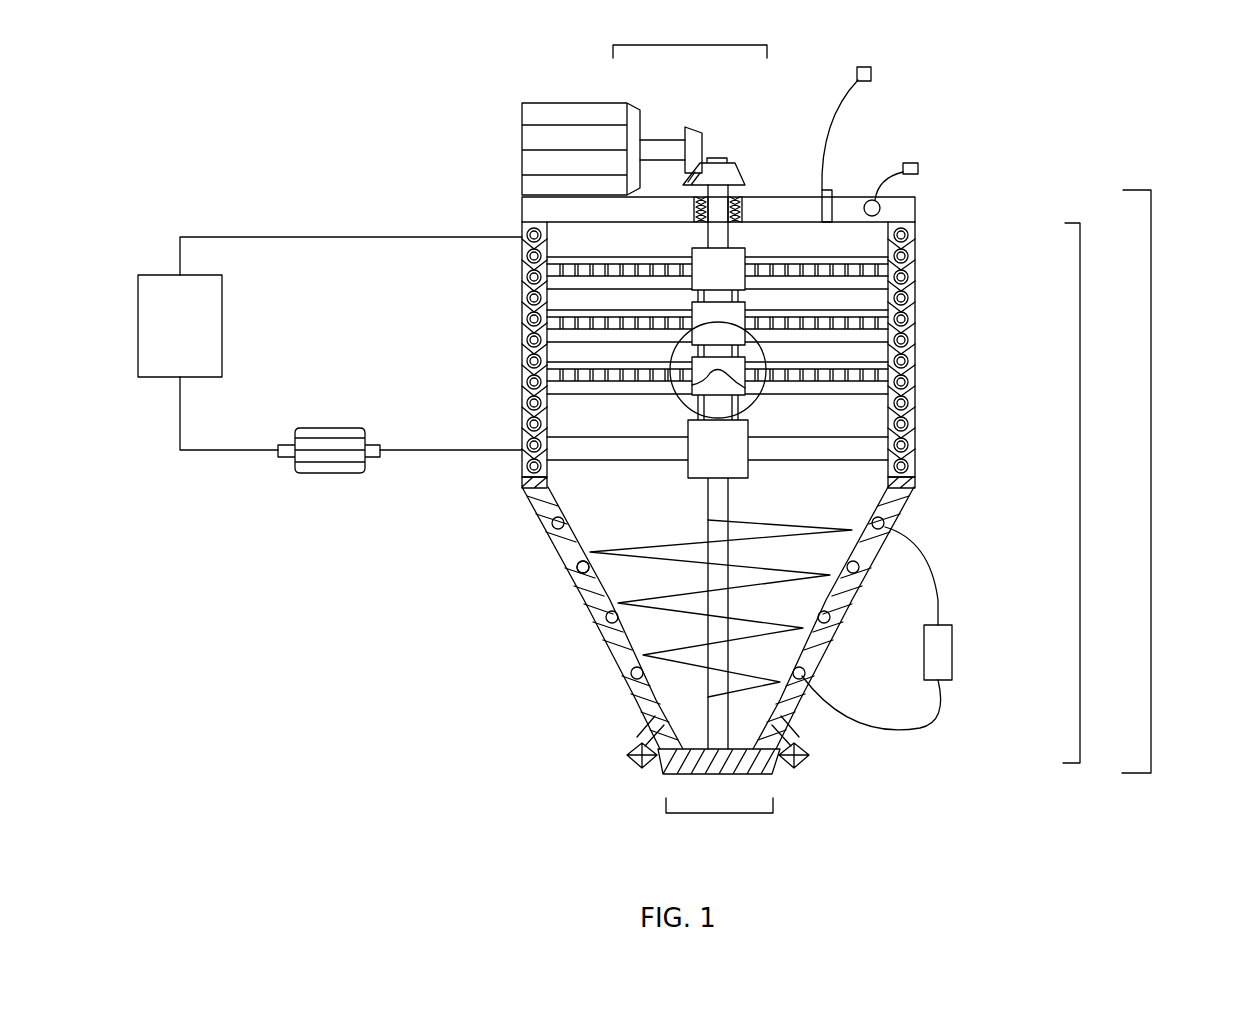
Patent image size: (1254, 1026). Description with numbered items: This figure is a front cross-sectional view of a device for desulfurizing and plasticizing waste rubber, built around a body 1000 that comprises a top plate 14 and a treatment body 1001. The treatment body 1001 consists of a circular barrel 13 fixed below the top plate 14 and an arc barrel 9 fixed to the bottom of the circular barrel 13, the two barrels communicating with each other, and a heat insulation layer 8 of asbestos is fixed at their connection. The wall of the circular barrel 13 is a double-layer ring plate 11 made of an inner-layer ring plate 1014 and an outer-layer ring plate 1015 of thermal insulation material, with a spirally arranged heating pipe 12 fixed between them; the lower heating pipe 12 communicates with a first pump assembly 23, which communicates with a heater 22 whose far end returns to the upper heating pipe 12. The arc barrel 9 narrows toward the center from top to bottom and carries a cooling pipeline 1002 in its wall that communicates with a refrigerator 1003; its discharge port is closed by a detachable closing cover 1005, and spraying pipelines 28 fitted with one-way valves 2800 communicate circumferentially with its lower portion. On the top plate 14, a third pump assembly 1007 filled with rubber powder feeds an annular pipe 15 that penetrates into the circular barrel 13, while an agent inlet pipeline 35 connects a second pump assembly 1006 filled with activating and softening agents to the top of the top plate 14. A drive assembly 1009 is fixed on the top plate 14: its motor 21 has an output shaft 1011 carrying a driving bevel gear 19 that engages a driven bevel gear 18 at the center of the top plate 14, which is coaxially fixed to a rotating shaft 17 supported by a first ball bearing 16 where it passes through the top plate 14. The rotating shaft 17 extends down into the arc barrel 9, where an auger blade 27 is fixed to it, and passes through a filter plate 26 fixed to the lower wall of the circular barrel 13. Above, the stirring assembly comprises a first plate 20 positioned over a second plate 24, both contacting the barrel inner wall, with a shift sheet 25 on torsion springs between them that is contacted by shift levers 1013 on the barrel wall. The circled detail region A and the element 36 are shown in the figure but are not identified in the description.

The body 1000 is at (1174, 481).
The treatment body 1001 is at (1106, 493).
The drive assembly 1009 is at (693, 429).
The output shaft 1011 is at (667, 150).
The motor 21 is at (540, 113).
The driving bevel gear 19 is at (692, 140).
The driven bevel gear 18 is at (720, 175).
The rotating shaft 17 is at (722, 200).
The first ball bearing 16 is at (741, 207).
The second pump assembly 1006 is at (858, 68).
The annular pipe 15 is at (875, 203).
The agent inlet pipeline 35 is at (828, 205).
The third pump assembly 1007 is at (920, 165).
The top plate 14 is at (907, 213).
The double-layer ring plate 11 is at (1010, 243).
The inner-layer ring plate 1014 is at (907, 245).
The outer-layer ring plate 1015 is at (907, 268).
The shift lever 1013 is at (900, 300).
The circular barrel 13 is at (907, 335).
The heating pipe 12 is at (902, 362).
The heat insulation layer 8 is at (915, 480).
The detail region A is at (885, 490).
The temperature sensor 36 is at (880, 527).
The arc barrel 9 is at (835, 608).
The refrigerator 1003 is at (940, 650).
The heater 22 is at (153, 306).
The first pump assembly 23 is at (327, 452).
The first plate 20 is at (590, 378).
The second plate 24 is at (632, 373).
The shift sheet 25 is at (628, 455).
The filter plate 26 is at (577, 560).
The auger blade 27 is at (653, 608).
The cooling pipeline 1002 is at (631, 672).
The spraying pipelines 28 is at (648, 745).
The one-way valves 2800 is at (810, 760).
The closing cover 1005 is at (772, 774).